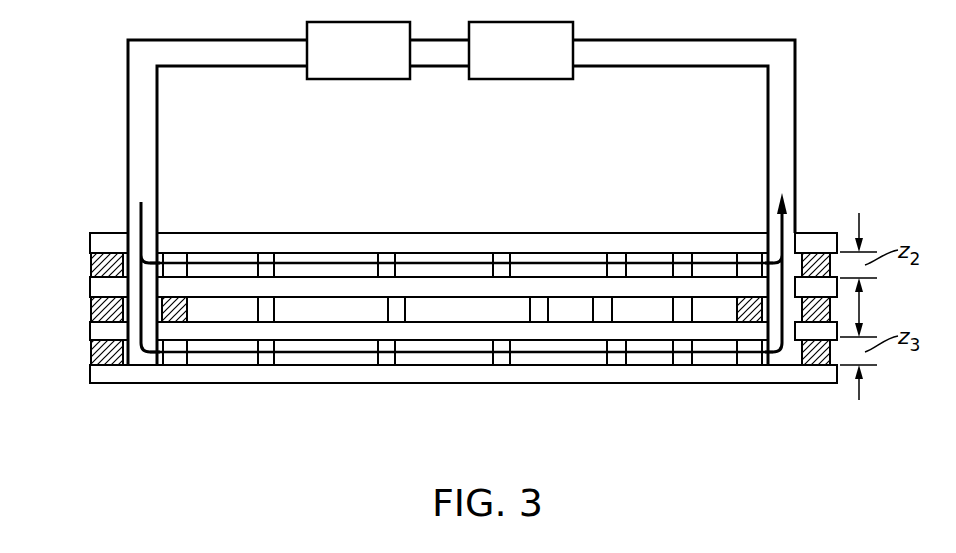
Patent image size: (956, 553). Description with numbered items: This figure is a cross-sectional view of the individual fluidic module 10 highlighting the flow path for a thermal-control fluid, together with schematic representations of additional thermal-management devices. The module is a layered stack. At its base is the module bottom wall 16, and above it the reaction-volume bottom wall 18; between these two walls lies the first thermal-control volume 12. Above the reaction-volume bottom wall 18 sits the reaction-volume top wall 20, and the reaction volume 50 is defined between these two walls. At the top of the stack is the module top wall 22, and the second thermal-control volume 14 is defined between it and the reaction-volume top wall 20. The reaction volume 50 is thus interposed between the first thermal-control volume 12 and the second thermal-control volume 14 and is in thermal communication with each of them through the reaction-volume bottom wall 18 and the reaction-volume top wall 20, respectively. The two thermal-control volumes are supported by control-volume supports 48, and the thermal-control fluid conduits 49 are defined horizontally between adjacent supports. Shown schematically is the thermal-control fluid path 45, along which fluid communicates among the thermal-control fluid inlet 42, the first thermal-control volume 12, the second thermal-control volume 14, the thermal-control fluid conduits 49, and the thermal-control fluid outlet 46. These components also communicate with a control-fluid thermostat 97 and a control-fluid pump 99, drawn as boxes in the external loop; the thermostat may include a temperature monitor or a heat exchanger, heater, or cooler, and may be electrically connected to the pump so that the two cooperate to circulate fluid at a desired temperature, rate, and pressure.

The individual fluidic module 10 is at (646, 169).
The first thermal-control volume 12 is at (98, 352).
The second thermal-control volume 14 is at (98, 268).
The module bottom wall 16 is at (98, 375).
The reaction-volume bottom wall 18 is at (98, 332).
The reaction-volume top wall 20 is at (98, 288).
The module top wall 22 is at (98, 245).
The thermal-control fluid inlet 42 is at (127, 226).
The thermal-control fluid path 45 is at (145, 218).
The thermal-control fluid outlet 46 is at (793, 222).
The control-volume supports 48 is at (266, 262).
The thermal-control fluid conduits 49 is at (330, 262).
The reaction volume 50 is at (93, 306).
The control-fluid thermostat 97 is at (532, 64).
The control-fluid pump 99 is at (369, 64).